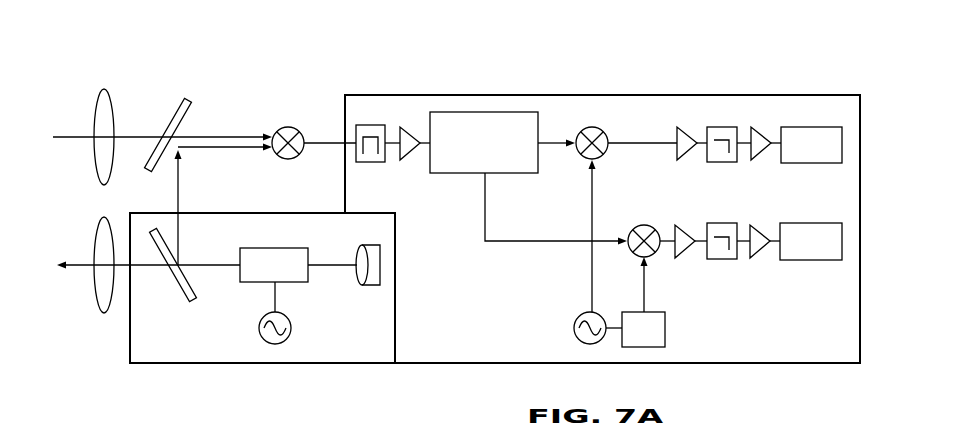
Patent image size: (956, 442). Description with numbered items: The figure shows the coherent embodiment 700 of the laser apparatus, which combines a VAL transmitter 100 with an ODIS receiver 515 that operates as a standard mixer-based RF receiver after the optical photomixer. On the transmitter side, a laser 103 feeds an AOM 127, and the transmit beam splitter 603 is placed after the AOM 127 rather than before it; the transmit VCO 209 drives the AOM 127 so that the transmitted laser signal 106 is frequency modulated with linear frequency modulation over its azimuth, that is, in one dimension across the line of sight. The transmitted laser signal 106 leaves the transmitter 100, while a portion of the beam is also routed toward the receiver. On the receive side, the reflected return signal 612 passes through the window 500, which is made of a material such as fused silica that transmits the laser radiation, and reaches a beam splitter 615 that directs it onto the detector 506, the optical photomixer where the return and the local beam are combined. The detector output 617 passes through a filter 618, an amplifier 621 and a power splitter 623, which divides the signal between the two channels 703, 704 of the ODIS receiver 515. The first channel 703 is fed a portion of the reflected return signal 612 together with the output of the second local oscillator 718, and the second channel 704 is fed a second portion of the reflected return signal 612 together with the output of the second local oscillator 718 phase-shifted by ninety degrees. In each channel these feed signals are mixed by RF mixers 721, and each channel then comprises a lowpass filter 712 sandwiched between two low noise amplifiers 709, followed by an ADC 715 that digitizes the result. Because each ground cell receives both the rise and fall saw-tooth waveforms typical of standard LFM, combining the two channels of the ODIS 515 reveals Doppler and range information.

The coherent embodiment 700 is at (145, 48).
The VAL transmitter 100 is at (130, 346).
The ODIS receiver 515 is at (454, 95).
The reflected return signal 612 is at (77, 137).
The window 500 is at (118, 118).
The beam splitter 615 is at (189, 110).
The transmitted laser signal 106 is at (181, 197).
The detector 506 is at (276, 131).
The detector output signal 617 is at (322, 141).
The filter 618 is at (370, 125).
The amplifier 621 is at (411, 127).
The power splitter 623 is at (482, 112).
The first channel 703 is at (578, 188).
The RF mixer 721 is at (592, 127).
The second channel 704 is at (576, 265).
The second local oscillator 718 is at (573, 329).
The low noise amplifier 709 is at (681, 128).
The lowpass filter 712 is at (720, 127).
The ADC 715 is at (812, 127).
The beam splitter 603 is at (172, 283).
The AOM 127 is at (238, 258).
The transmit VCO 209 is at (292, 331).
The laser 103 is at (368, 287).